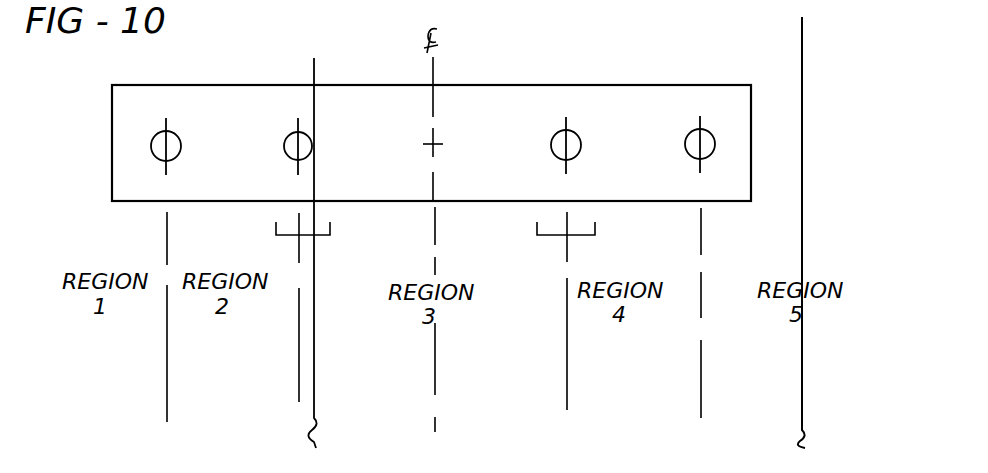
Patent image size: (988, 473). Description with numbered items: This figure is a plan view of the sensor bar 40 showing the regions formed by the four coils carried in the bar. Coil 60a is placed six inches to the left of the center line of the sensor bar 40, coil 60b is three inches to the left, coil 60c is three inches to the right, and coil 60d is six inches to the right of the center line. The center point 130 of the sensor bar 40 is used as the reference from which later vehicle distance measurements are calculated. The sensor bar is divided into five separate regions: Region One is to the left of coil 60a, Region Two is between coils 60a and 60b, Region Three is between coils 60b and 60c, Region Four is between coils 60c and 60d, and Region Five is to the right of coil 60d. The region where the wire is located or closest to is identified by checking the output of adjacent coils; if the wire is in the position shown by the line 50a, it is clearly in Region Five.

The sensor bar 40 is at (751, 133).
The line indicating wire position 50a is at (802, 99).
The coil 60a is at (175, 140).
The coil 60b is at (284, 152).
The coil 60c is at (580, 136).
The coil 60d is at (684, 153).
The center point 130 is at (436, 141).